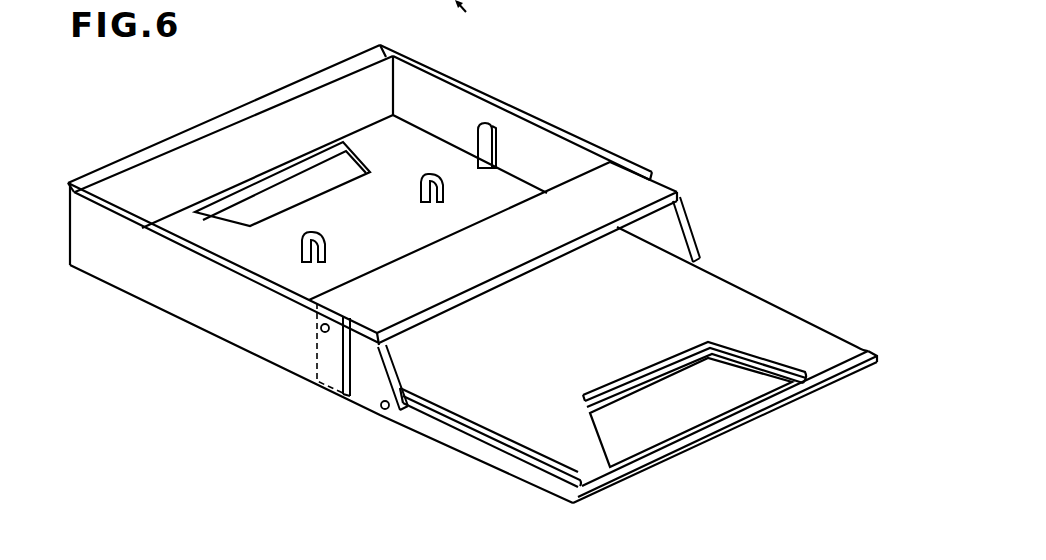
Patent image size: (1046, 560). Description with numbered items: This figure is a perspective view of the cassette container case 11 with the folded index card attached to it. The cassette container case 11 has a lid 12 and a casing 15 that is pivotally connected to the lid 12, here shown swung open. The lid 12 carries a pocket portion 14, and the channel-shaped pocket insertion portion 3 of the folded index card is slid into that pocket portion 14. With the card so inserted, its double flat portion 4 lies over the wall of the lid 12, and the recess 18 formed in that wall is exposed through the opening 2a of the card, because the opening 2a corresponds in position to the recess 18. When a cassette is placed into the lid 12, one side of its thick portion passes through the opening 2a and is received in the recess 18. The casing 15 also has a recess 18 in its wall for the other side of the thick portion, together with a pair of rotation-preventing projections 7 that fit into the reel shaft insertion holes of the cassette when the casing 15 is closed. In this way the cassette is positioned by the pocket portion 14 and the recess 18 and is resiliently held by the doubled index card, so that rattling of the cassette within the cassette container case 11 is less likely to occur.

The opening 2a is at (628, 362).
The pocket insertion portion 3 is at (598, 238).
The double flat portion 4 is at (750, 298).
The rotation-preventing projections 7 is at (326, 247).
The cassette container case 11 is at (553, 127).
The lid 12 is at (864, 350).
The pocket portion 14 is at (685, 238).
The casing 15 is at (205, 129).
The recess 18 is at (315, 173).